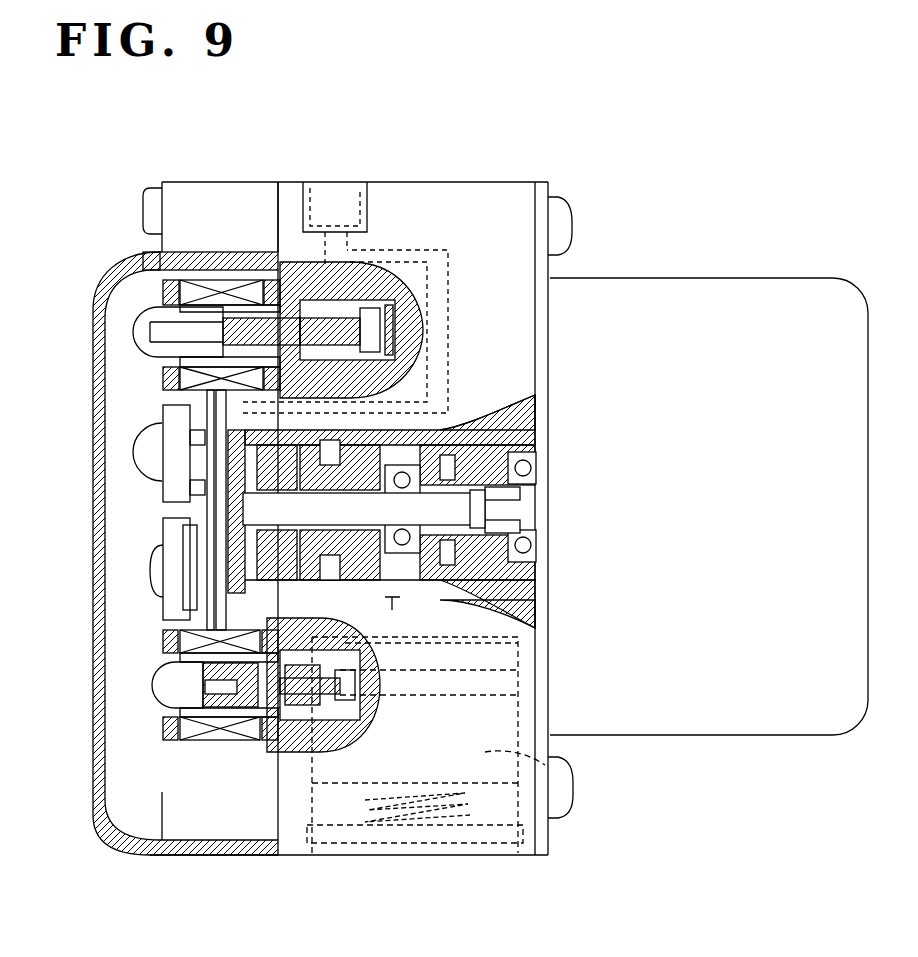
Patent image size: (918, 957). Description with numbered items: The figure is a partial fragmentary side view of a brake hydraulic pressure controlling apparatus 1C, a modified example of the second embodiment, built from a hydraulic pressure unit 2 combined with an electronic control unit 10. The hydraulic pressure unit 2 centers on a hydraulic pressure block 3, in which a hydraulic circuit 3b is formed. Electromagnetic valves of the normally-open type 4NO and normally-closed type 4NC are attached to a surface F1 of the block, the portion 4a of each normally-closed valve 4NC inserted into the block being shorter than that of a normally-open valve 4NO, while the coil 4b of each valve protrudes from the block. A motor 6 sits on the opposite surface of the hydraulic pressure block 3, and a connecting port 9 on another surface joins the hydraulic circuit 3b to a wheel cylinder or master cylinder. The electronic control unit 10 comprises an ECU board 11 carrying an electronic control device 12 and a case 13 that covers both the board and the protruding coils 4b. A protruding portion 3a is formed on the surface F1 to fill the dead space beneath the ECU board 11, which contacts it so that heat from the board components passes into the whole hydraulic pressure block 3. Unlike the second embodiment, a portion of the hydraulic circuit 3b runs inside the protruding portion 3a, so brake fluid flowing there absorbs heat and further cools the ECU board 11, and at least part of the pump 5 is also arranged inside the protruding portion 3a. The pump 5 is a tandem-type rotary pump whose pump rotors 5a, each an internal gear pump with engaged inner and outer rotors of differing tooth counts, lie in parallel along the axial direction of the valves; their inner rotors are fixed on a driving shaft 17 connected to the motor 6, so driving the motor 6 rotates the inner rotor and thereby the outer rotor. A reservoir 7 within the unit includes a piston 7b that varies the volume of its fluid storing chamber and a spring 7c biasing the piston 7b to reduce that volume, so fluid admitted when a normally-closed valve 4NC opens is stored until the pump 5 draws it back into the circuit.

The brake hydraulic pressure controlling apparatus 1C is at (380, 180).
The hydraulic pressure unit 2 is at (510, 180).
The hydraulic pressure block 3 is at (533, 228).
The protruding portion 3a is at (250, 735).
The hydraulic circuit 3b is at (235, 330).
The normally-open type electromagnetic valve 4NO is at (140, 442).
The normally-closed type electromagnetic valve 4NC is at (160, 685).
The portion inserted into the hydraulic pressure block 4a is at (372, 630).
The coil 4b is at (160, 253).
The pump 5 is at (393, 607).
The pump rotor 5a is at (445, 418).
The motor 6 is at (745, 715).
The reservoir 7 is at (365, 845).
The piston 7b is at (545, 765).
The spring 7c is at (425, 815).
The connecting port 9 is at (320, 212).
The electronic control unit 10 is at (220, 858).
The ECU board 11 is at (180, 507).
The electronic control device 12 is at (180, 455).
The case 13 is at (130, 842).
The driving shaft 17 is at (462, 510).
The surface of the hydraulic pressure block F1 is at (277, 212).